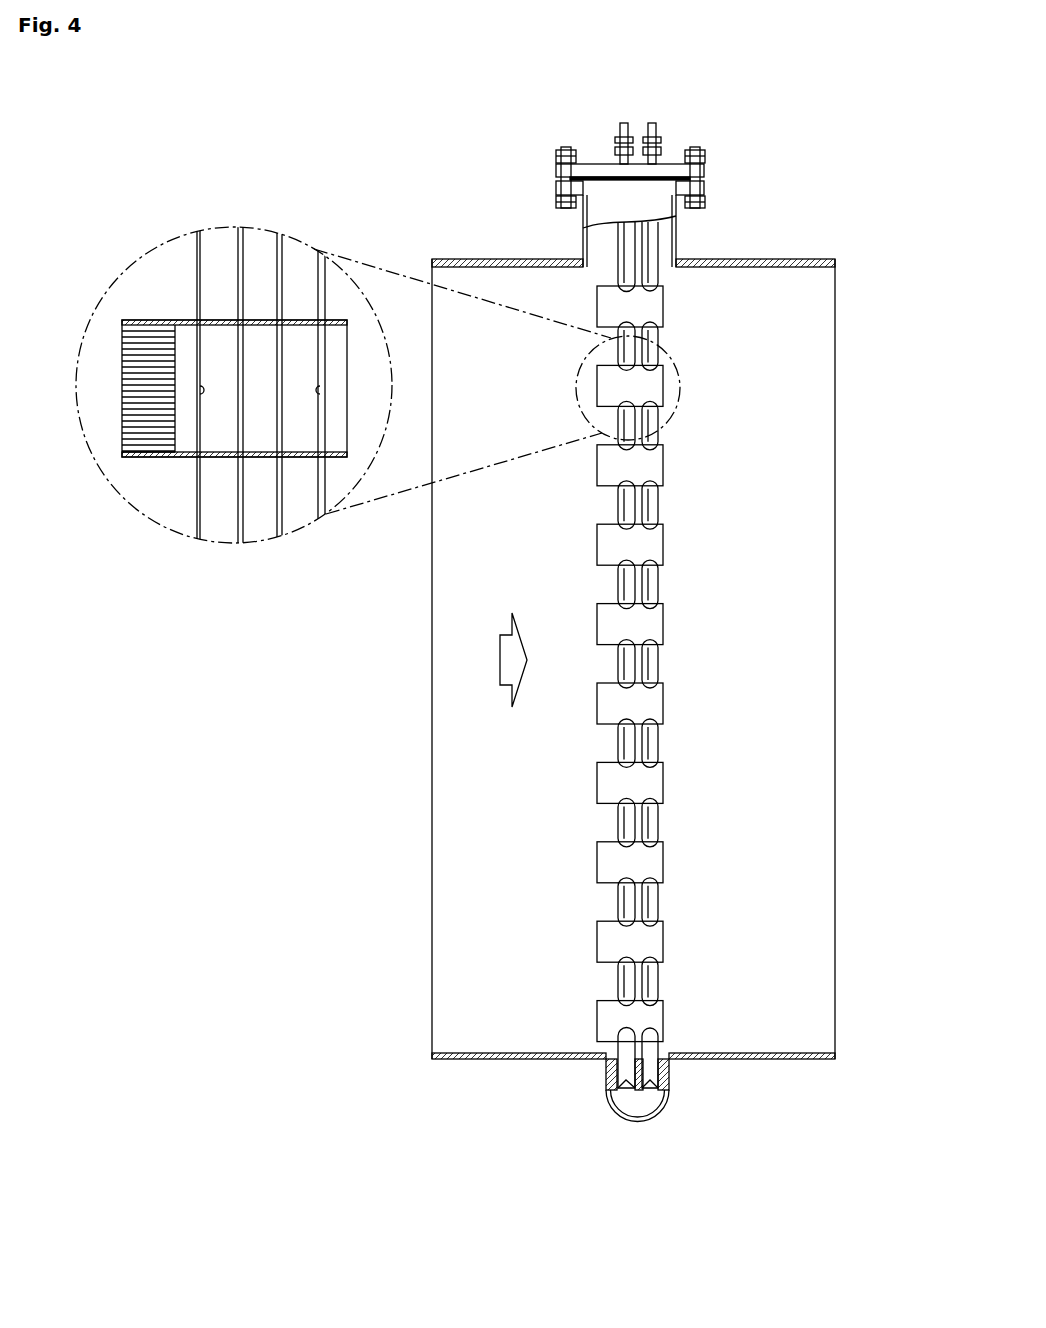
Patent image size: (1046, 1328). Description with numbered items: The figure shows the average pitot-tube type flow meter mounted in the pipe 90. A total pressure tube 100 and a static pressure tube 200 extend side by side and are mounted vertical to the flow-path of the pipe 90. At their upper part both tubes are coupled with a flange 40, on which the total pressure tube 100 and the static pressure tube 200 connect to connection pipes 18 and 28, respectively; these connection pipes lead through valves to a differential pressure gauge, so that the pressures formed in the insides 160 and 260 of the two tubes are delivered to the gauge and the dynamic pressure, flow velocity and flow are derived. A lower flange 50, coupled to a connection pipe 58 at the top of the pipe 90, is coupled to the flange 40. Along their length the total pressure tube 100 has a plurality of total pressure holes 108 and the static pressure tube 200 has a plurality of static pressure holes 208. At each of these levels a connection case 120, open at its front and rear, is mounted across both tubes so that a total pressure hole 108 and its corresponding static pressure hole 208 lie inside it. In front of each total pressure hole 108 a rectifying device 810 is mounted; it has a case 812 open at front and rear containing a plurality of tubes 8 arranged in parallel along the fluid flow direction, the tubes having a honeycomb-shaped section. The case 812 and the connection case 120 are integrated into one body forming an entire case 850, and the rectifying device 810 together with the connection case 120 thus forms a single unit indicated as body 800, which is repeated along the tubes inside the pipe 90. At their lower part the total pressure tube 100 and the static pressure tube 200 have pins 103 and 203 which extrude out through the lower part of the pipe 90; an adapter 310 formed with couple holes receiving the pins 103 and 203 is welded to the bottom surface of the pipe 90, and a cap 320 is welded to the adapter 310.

The tubes 8 is at (116, 342).
The connection pipe 18 is at (624, 122).
The connection pipe 28 is at (652, 122).
The flange 40 is at (704, 170).
The lower flange 50 is at (704, 190).
The connection pipe 58 is at (662, 201).
The pipe 90 is at (484, 260).
The total pressure tube 100 is at (588, 671).
The pin 103 is at (625, 1088).
The total pressure hole 108 is at (204, 390).
The connection case 120 is at (296, 392).
The inside of the total pressure tube 160 is at (228, 268).
The static pressure tube 200 is at (689, 671).
The pin 203 is at (650, 1088).
The static pressure hole 208 is at (322, 390).
The inside of the static pressure tube 260 is at (312, 268).
The adapter 310 is at (671, 1075).
The cap 320 is at (656, 1117).
The rectifying device and connection case body 800 is at (660, 306).
The rectifying device 810 is at (188, 388).
The case 812 is at (150, 457).
The entire case 850 is at (212, 415).